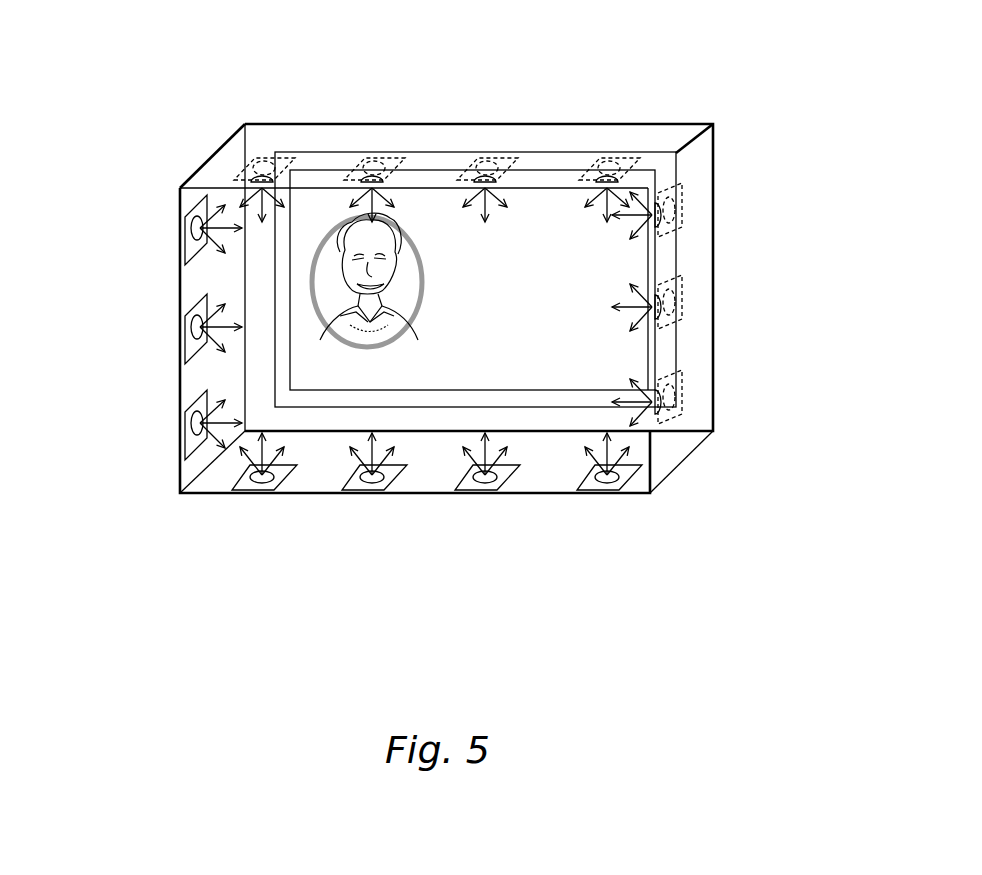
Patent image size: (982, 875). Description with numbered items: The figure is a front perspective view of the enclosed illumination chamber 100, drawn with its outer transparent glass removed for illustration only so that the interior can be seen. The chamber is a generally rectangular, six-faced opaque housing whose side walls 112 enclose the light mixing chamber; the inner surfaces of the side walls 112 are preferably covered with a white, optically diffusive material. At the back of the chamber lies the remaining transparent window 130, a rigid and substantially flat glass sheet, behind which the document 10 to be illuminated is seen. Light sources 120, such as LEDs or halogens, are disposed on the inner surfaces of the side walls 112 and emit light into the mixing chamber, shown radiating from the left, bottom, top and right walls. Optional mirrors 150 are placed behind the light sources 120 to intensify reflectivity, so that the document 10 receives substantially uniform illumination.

The illumination chamber 100 is at (433, 112).
The side wall 112 is at (192, 380).
The transparent window 130 is at (550, 162).
The document 10 is at (325, 372).
The mirror 150 is at (187, 343).
The light source 120 is at (377, 172).